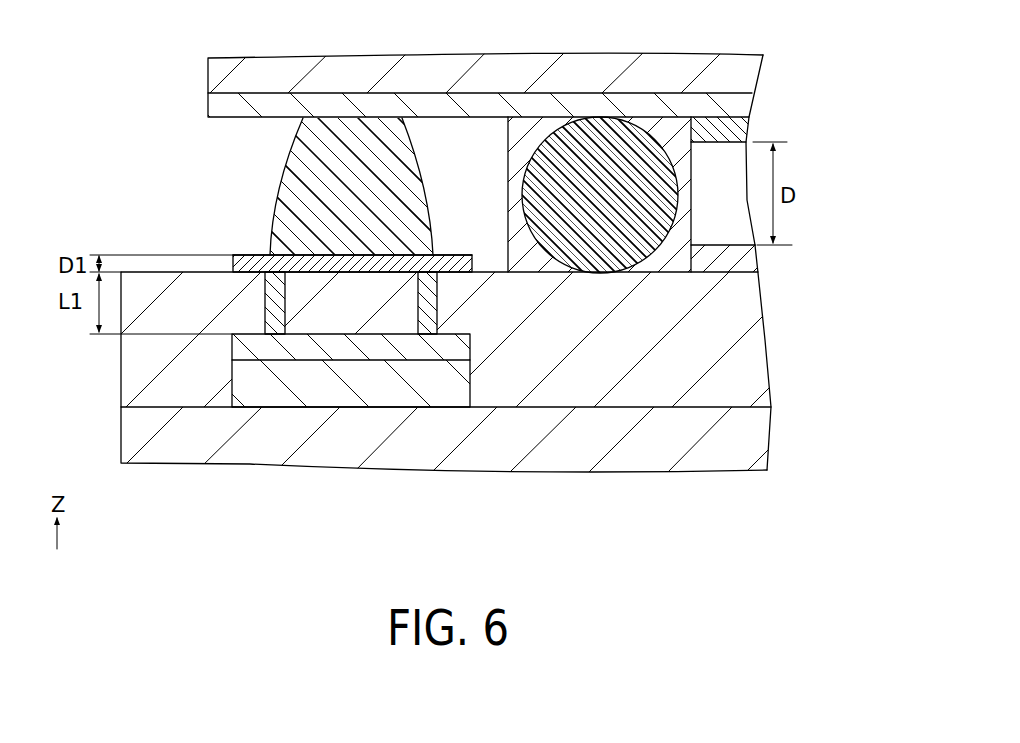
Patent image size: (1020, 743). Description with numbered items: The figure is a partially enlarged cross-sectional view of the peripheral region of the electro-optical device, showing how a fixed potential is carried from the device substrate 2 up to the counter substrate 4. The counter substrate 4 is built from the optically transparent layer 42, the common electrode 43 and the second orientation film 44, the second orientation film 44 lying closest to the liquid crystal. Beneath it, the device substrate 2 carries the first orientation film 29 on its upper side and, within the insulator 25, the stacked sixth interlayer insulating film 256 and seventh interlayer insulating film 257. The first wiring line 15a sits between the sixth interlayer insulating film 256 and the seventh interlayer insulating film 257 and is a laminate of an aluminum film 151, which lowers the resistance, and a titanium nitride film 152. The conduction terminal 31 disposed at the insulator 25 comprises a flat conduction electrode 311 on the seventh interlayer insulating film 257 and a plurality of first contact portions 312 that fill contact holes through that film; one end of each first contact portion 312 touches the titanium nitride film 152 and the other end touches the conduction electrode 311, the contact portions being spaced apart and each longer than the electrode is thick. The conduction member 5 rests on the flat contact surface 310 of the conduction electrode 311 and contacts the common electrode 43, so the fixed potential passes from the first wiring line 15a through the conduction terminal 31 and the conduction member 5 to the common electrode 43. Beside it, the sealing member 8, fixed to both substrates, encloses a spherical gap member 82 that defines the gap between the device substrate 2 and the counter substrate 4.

The device substrate 2 is at (466, 388).
The counter substrate 4 is at (477, 134).
The conduction member 5 is at (303, 173).
The sealing member 8 is at (600, 147).
The first wiring line 15a is at (396, 447).
The insulator 25 is at (773, 450).
The first orientation film 29 is at (745, 262).
The conduction terminal 31 is at (337, 373).
The optically transparent layer 42 is at (737, 72).
The common electrode 43 is at (740, 106).
The second orientation film 44 is at (740, 133).
The gap member 82 is at (562, 172).
The aluminum film 151 is at (460, 392).
The titanium nitride film 152 is at (480, 358).
The sixth interlayer insulating film 256 is at (755, 433).
The seventh interlayer insulating film 257 is at (755, 362).
The contact surface 310 is at (254, 253).
The conduction electrode 311 is at (336, 357).
The first contact portion 312 is at (275, 318).